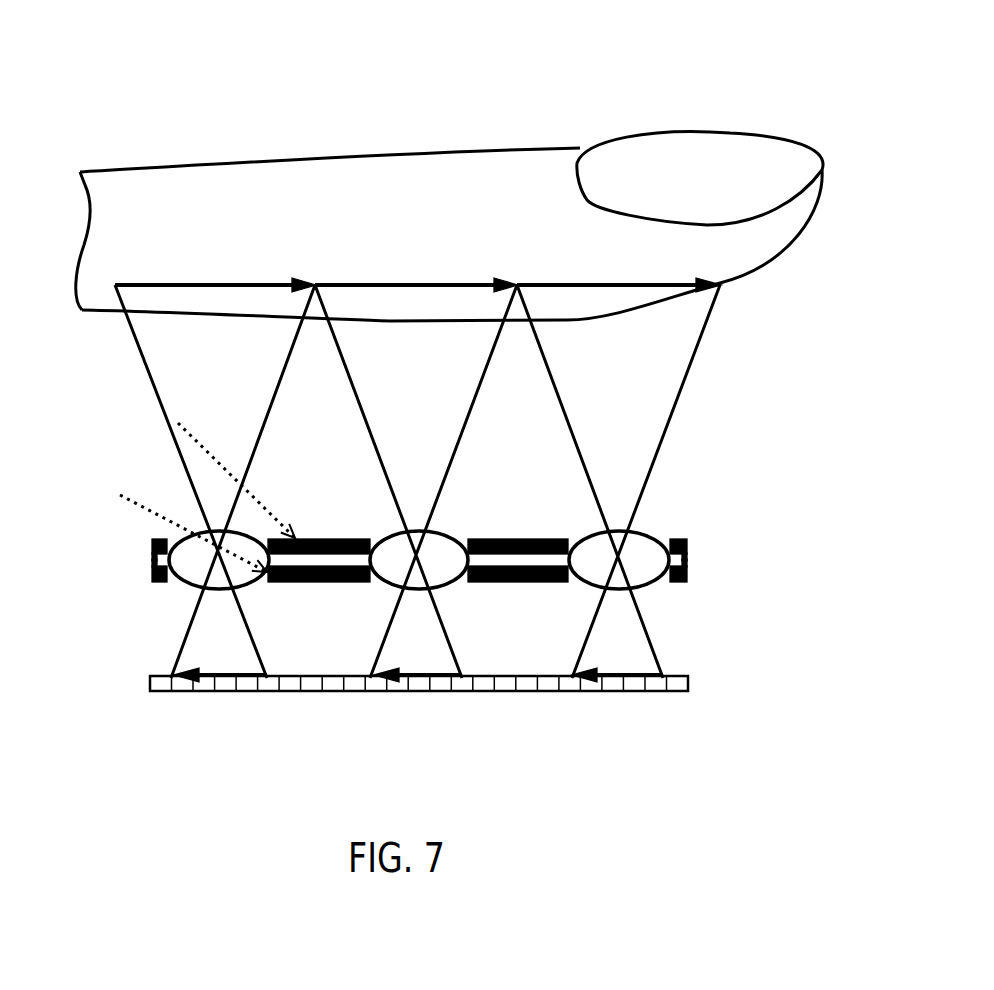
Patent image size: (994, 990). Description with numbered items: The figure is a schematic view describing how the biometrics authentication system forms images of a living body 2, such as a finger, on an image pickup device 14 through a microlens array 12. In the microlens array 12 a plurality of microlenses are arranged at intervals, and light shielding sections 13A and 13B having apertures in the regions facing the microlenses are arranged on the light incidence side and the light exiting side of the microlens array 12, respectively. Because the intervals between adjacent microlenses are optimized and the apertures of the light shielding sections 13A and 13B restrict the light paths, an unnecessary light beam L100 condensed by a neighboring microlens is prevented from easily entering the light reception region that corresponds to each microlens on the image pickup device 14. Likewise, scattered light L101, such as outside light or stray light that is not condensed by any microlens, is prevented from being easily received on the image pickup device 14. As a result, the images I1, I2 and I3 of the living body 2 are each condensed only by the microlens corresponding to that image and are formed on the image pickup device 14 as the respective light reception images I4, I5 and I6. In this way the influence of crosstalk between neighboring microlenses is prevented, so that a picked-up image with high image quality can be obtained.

The living body 2 is at (498, 112).
The image of the living body I1 is at (216, 283).
The image of the living body I2 is at (416, 283).
The image of the living body I3 is at (582, 283).
The light reception image I4 is at (221, 695).
The light reception image I5 is at (421, 695).
The light reception image I6 is at (621, 695).
The microlens array 12 is at (643, 558).
The light shielding section 13A is at (522, 548).
The light shielding section 13B is at (522, 572).
The image pickup device 14 is at (670, 683).
The unnecessary light beam L100 is at (150, 518).
The scattered light L101 is at (210, 462).